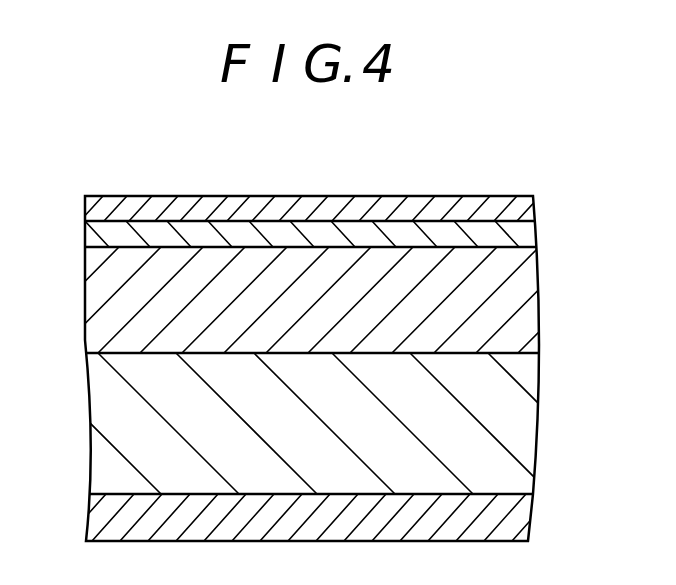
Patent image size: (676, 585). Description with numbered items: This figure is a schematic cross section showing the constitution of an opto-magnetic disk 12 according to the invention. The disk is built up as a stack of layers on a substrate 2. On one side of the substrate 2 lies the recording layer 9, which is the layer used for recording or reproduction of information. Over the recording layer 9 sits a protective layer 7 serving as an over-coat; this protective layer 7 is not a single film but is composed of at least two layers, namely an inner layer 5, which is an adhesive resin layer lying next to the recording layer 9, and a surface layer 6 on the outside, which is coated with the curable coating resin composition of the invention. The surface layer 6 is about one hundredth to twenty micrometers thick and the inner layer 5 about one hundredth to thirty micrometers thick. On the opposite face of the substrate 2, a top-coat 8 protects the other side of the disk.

The opto-magnetic disk 12 is at (329, 312).
The substrate 2 is at (485, 392).
The top-coat 8 is at (483, 518).
The recording layer 9 is at (492, 285).
The inner layer 5 is at (518, 232).
The surface layer 6 is at (523, 207).
The protective layer 7 is at (362, 205).